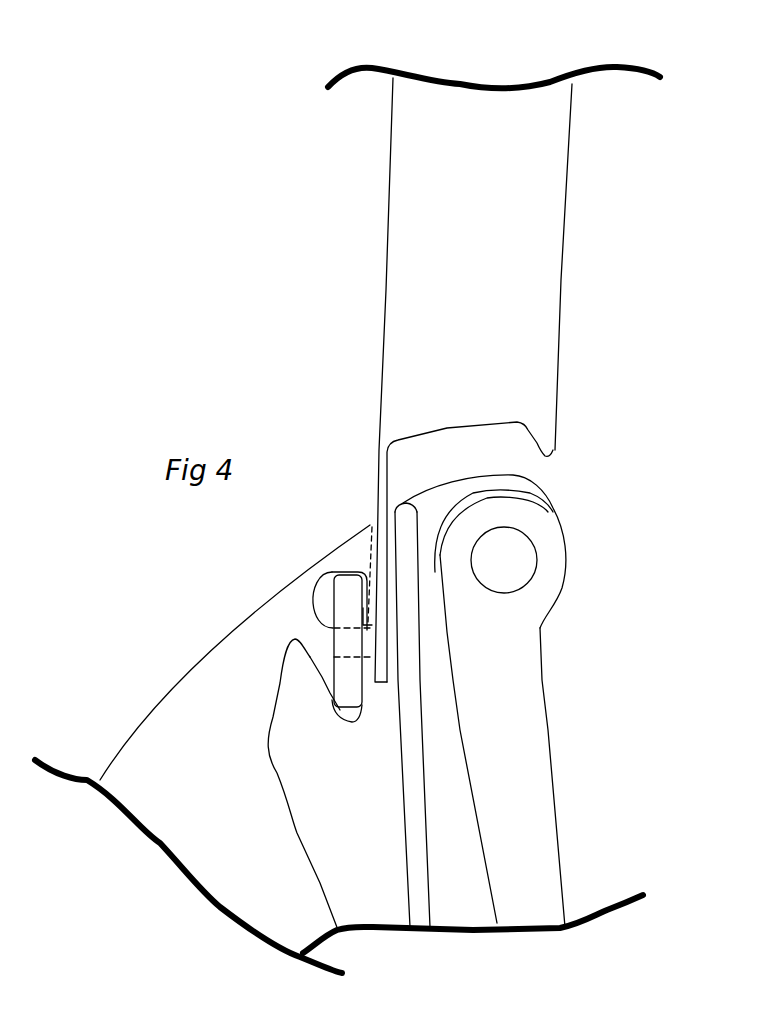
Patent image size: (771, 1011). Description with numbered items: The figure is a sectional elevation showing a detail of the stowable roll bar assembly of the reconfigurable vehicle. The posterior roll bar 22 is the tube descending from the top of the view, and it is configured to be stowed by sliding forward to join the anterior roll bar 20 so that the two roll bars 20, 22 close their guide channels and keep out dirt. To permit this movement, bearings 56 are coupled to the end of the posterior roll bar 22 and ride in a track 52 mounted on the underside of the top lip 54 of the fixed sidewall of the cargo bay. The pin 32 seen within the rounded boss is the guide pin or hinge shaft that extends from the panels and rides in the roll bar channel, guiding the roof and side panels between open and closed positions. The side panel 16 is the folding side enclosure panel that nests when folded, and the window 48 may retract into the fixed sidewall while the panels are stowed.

The side panel 16 is at (418, 847).
The anterior roll bar 20 is at (532, 335).
The posterior roll bar 22 is at (541, 380).
The guide pin 32 is at (518, 565).
The window 48 is at (530, 487).
The track 52 is at (323, 662).
The top lip 54 is at (345, 558).
The bearings 56 is at (352, 684).